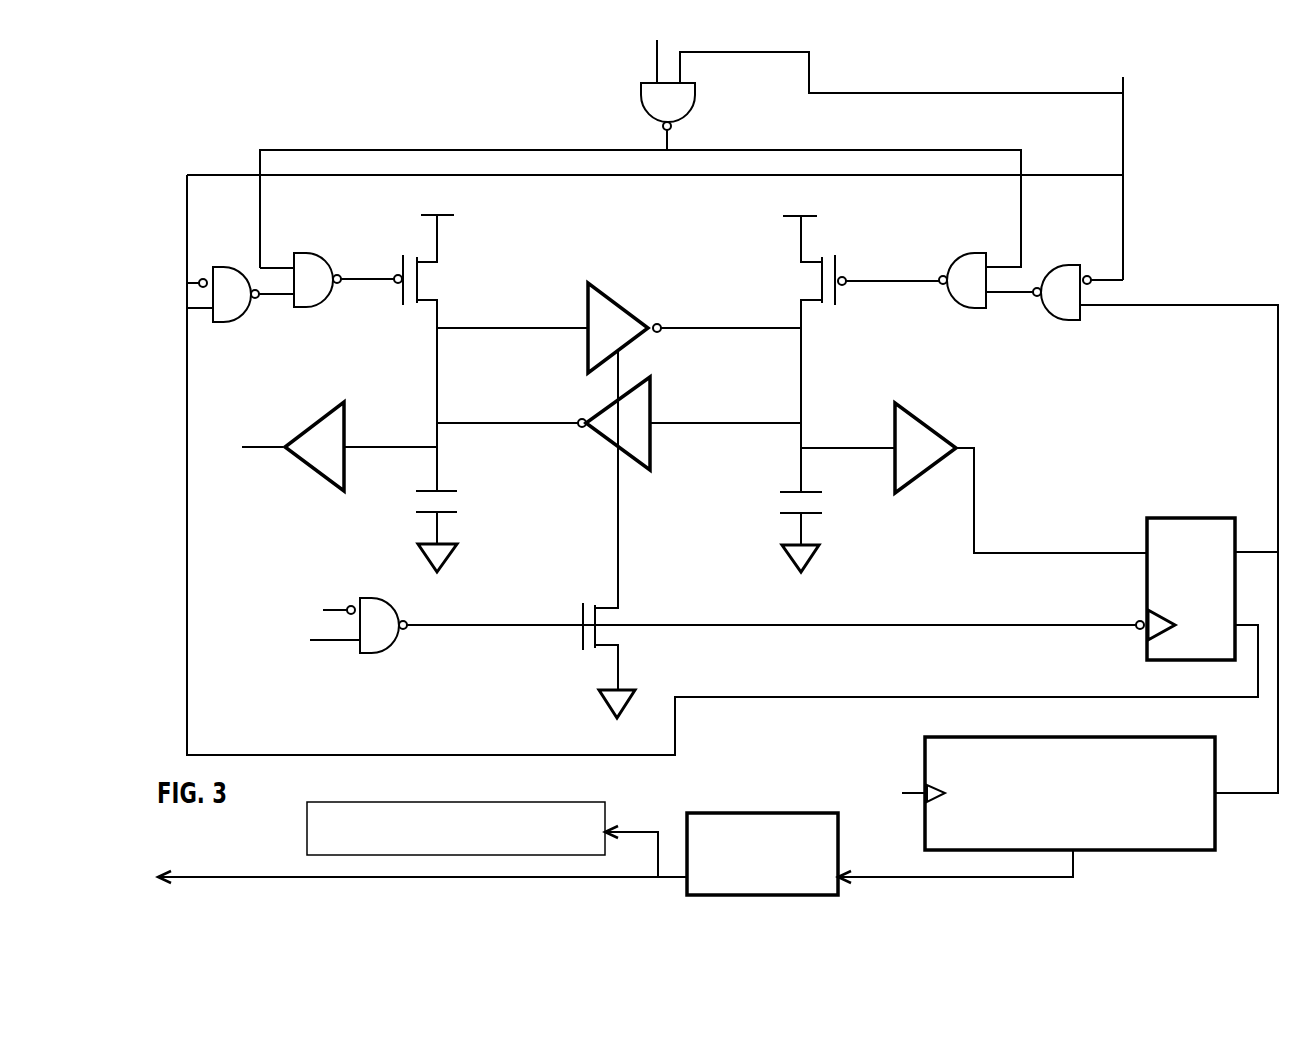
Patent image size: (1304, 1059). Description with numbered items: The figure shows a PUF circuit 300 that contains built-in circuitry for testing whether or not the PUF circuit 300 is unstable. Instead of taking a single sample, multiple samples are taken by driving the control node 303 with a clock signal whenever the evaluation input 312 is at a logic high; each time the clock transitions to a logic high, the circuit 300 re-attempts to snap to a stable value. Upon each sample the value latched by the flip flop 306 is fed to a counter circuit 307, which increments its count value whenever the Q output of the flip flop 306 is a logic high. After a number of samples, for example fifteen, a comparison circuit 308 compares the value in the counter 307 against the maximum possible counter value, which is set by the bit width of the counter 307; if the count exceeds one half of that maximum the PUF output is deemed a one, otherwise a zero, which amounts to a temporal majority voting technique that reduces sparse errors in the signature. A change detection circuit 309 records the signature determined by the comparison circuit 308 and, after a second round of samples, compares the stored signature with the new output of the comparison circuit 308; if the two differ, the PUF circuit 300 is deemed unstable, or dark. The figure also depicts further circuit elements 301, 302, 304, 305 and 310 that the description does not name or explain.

The PUF circuit 300 is at (1263, 240).
The first inverter 301 is at (617, 322).
The second inverter 302 is at (639, 448).
The control node 303 is at (538, 148).
The first node 304 is at (436, 390).
The second node 305 is at (803, 380).
The flip flop 306 is at (1193, 533).
The counter circuit 307 is at (1172, 804).
The comparison circuit 308 is at (787, 875).
The change detection circuit 309 is at (533, 842).
The buffer 310 is at (968, 443).
The evaluation input 312 is at (1156, 119).